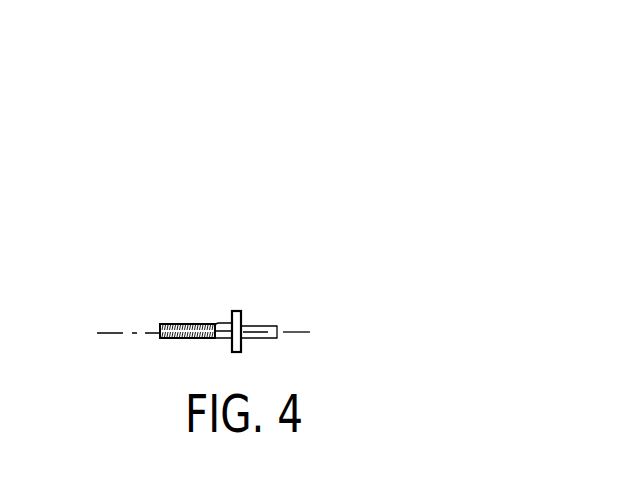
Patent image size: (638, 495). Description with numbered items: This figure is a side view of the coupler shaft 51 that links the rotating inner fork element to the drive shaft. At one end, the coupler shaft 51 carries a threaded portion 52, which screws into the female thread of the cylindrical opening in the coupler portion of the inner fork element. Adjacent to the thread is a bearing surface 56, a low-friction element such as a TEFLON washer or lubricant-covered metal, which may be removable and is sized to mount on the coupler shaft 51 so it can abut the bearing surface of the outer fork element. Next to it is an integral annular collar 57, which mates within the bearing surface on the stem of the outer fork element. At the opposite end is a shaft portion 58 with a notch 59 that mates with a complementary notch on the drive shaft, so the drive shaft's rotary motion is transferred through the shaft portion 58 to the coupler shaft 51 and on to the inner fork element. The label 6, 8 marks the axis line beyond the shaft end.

The coupler shaft 51 is at (270, 187).
The threaded portion 52 is at (173, 325).
The bearing surface 56 is at (228, 324).
The integral annular collar 57 is at (238, 312).
The shaft portion 58 is at (253, 325).
The notch 59 is at (275, 325).
The housing part 6 is at (320, 300).
The housing part 8 is at (320, 333).